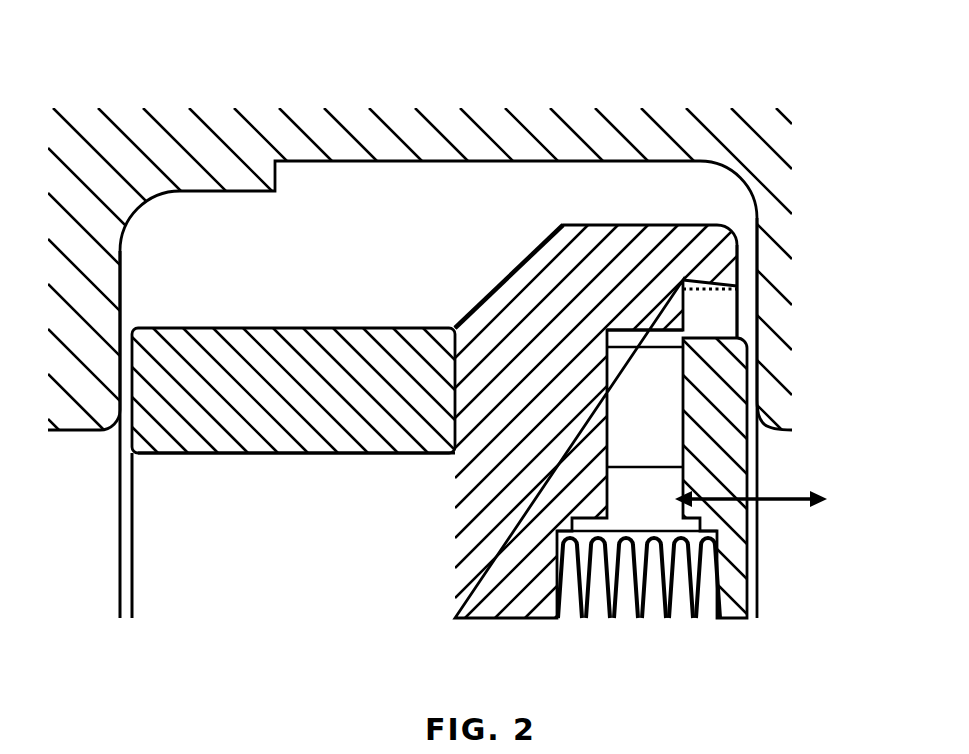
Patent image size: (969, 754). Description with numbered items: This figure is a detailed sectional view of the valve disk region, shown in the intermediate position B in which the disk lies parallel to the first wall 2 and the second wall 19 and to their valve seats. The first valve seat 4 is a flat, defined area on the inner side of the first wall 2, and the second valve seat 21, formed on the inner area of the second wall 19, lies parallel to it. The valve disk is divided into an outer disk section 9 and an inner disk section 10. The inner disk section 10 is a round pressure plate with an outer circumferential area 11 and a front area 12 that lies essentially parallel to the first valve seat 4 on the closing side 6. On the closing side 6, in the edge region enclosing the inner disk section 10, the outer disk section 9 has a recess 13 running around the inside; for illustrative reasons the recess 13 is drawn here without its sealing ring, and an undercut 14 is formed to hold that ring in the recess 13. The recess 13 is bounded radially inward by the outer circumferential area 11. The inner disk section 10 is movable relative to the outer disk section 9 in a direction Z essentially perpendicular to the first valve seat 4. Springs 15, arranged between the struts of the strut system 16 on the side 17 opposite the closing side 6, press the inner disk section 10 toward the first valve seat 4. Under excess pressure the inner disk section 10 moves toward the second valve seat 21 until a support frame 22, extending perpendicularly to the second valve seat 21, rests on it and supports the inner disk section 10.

The first wall 2 is at (813, 185).
The first valve seat 4 is at (790, 288).
The closing side 6 is at (815, 630).
The outer disk section 9 is at (668, 283).
The inner disk section 10 is at (758, 462).
The outer circumferential area 11 is at (734, 291).
The front area 12 is at (780, 543).
The recess 13 is at (745, 311).
The undercut 14 is at (737, 285).
The springs 15 is at (693, 585).
The strut system 16 is at (530, 507).
The side opposite the closing side 17 is at (115, 665).
The second wall 19 is at (112, 239).
The second valve seat 21 is at (152, 373).
The support frame 22 is at (257, 415).
The direction Z is at (775, 501).
The intermediate position B is at (496, 226).